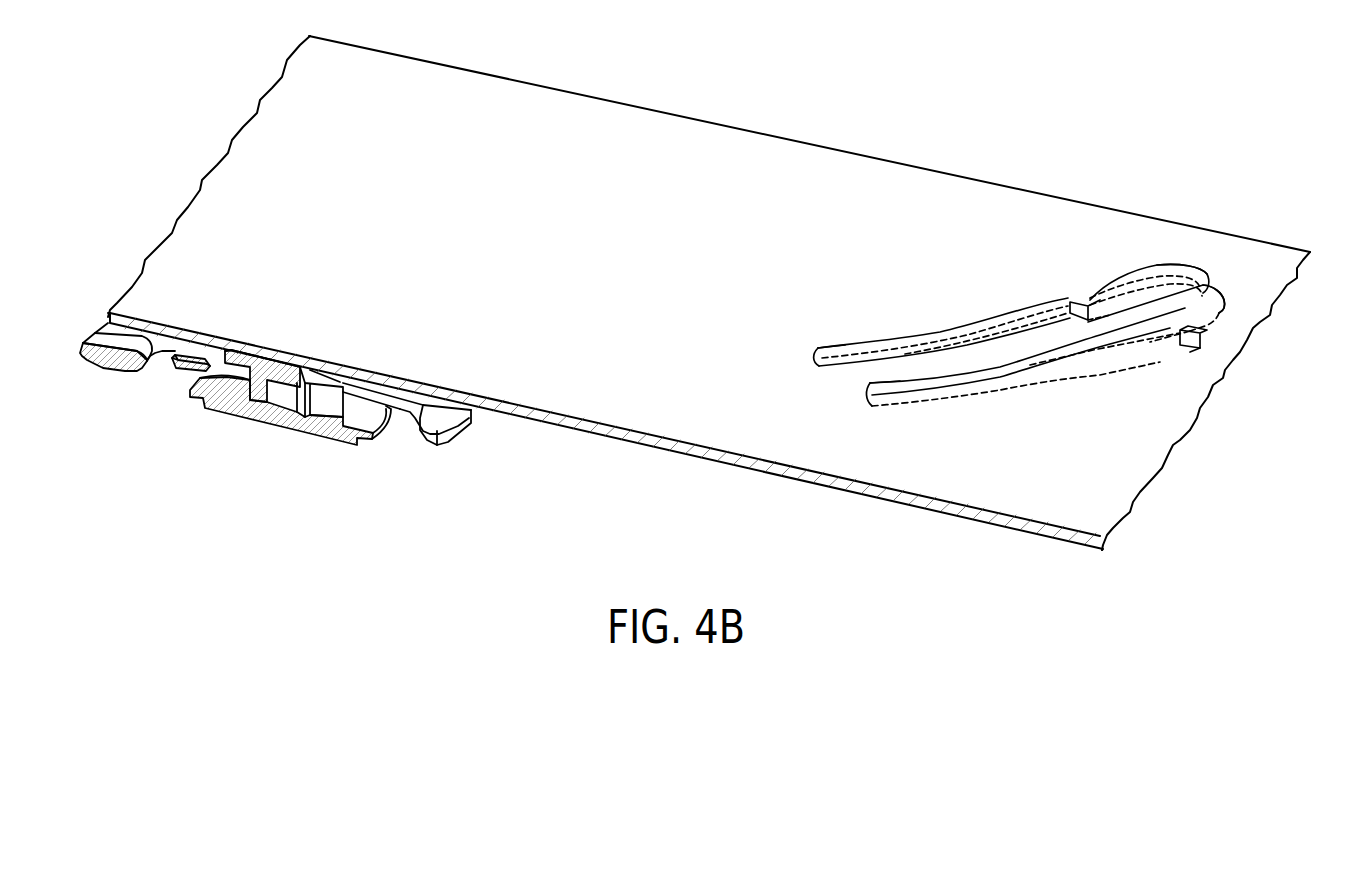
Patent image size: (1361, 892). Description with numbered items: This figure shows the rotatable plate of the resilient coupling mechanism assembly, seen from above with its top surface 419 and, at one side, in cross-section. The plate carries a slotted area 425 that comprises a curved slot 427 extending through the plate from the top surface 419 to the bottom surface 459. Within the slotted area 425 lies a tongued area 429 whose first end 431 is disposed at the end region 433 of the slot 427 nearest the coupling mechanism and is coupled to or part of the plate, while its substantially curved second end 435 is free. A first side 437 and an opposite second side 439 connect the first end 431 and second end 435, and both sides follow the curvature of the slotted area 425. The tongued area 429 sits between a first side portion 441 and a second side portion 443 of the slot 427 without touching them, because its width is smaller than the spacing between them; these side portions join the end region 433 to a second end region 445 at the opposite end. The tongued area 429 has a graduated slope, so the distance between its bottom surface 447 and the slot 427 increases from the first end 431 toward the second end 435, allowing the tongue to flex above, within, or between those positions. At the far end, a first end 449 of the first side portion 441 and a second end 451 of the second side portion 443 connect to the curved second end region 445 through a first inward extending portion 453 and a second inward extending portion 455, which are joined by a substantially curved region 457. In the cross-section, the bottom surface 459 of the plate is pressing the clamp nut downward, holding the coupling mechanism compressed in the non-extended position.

The top surface 419 is at (773, 188).
The slotted area 425 is at (1005, 300).
The slot 427 is at (1100, 360).
The tongued area 429 is at (983, 334).
The first end 431 is at (841, 381).
The end region 433 is at (861, 408).
The second end 435 is at (1196, 268).
The first side 437 is at (1061, 292).
The second side 439 is at (1120, 329).
The first side portion 441 is at (937, 330).
The second side portion 443 is at (1012, 395).
The second end region 445 is at (1240, 298).
The bottom surface 447 is at (1189, 313).
The first end 449 is at (1076, 303).
The second end 451 is at (1188, 345).
The first inward extending portion 453 is at (1098, 301).
The second inward extending portion 455 is at (1168, 331).
The substantially curved region 457 is at (1221, 293).
The bottom surface 459 is at (481, 421).